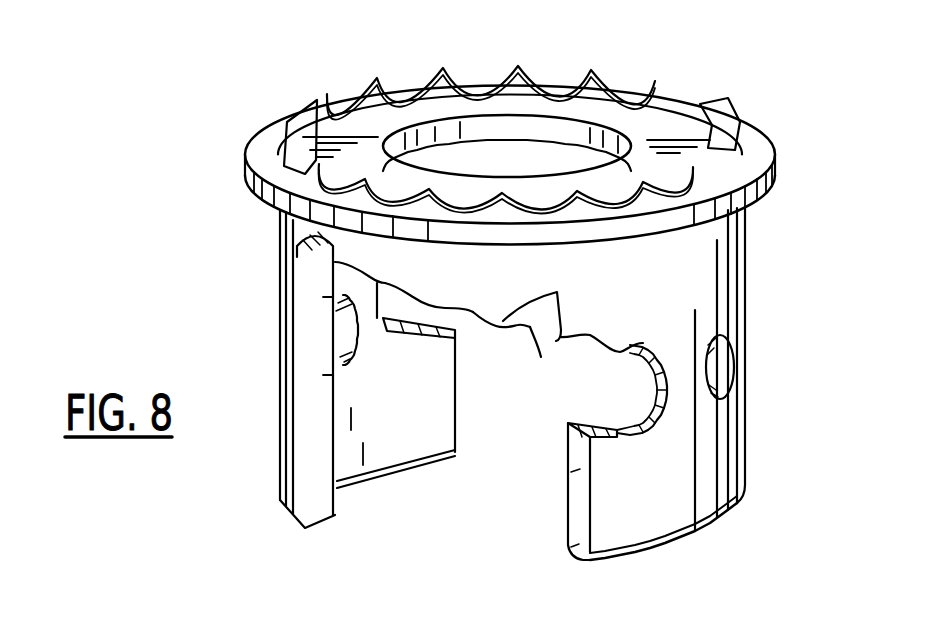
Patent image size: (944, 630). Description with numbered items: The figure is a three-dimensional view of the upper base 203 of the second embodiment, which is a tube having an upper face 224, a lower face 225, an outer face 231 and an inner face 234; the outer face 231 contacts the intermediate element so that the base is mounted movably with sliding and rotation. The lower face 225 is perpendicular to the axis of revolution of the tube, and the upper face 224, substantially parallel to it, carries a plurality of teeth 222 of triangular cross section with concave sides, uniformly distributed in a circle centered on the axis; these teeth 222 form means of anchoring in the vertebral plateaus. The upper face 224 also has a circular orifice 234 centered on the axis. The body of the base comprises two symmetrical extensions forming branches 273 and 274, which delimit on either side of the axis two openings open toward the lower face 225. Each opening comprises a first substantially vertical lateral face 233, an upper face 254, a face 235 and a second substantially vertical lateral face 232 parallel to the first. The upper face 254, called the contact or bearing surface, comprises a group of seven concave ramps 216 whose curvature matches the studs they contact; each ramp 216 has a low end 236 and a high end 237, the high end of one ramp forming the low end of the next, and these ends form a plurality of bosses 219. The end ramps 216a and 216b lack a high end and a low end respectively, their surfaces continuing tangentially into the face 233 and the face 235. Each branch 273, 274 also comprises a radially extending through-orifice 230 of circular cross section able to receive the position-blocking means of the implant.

The upper base 203 is at (487, 519).
The ramps 216 is at (541, 357).
The end ramp 216a is at (282, 262).
The end ramp 216b is at (643, 344).
The bosses 219 is at (558, 291).
The teeth 222 is at (660, 82).
The upper face 224 is at (760, 140).
The lower face 225 is at (624, 570).
The through-orifice 230 is at (740, 353).
The outer face 231 is at (684, 497).
The second lateral face 232 is at (572, 510).
The first lateral face 233 is at (316, 510).
The inner face 234 is at (446, 163).
The face 235 is at (598, 420).
The low end 236 is at (448, 298).
The high end 237 is at (385, 283).
The upper face 254 is at (473, 325).
The branch 273 is at (717, 451).
The branch 274 is at (305, 430).